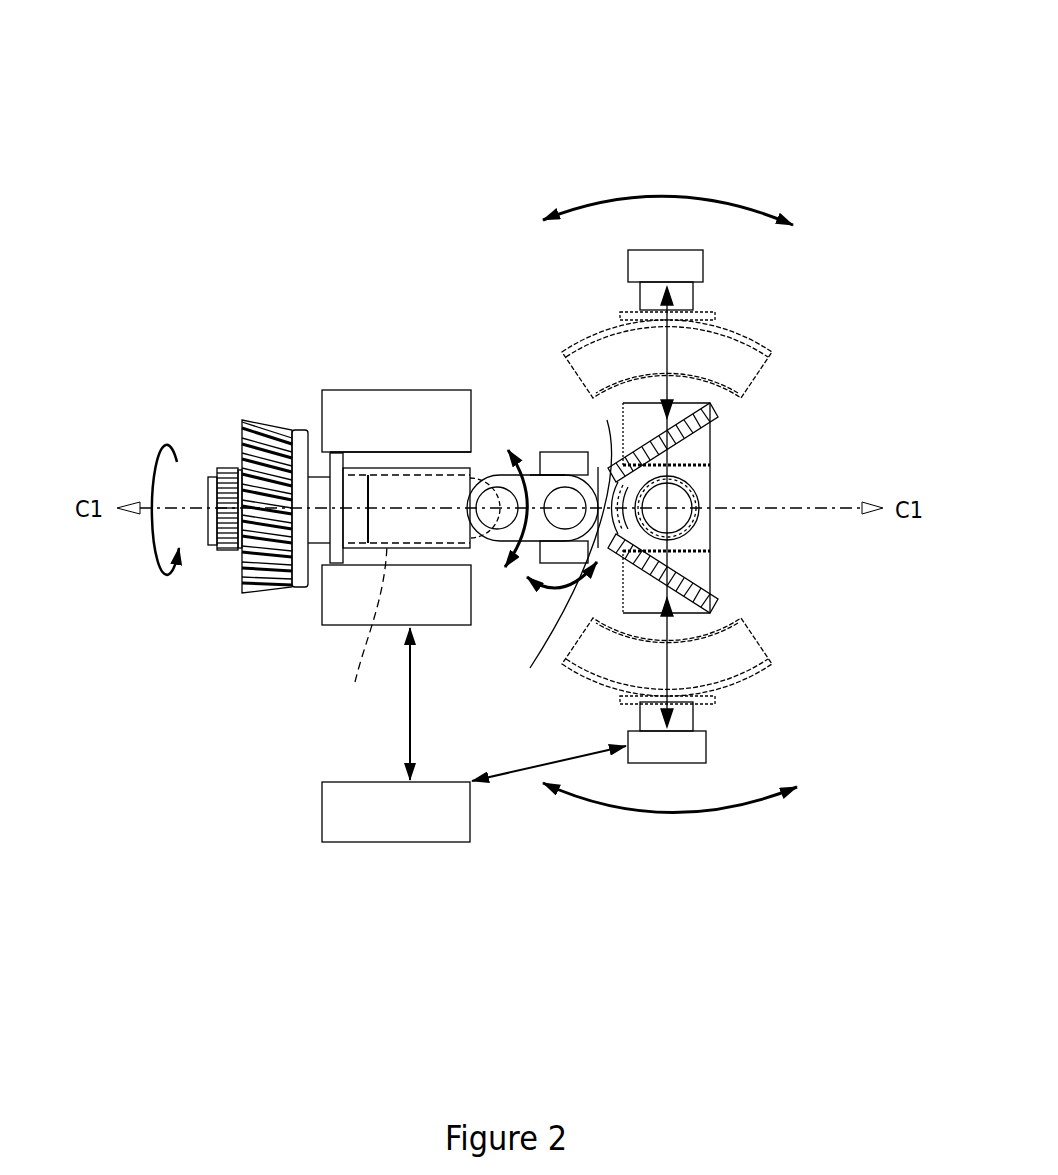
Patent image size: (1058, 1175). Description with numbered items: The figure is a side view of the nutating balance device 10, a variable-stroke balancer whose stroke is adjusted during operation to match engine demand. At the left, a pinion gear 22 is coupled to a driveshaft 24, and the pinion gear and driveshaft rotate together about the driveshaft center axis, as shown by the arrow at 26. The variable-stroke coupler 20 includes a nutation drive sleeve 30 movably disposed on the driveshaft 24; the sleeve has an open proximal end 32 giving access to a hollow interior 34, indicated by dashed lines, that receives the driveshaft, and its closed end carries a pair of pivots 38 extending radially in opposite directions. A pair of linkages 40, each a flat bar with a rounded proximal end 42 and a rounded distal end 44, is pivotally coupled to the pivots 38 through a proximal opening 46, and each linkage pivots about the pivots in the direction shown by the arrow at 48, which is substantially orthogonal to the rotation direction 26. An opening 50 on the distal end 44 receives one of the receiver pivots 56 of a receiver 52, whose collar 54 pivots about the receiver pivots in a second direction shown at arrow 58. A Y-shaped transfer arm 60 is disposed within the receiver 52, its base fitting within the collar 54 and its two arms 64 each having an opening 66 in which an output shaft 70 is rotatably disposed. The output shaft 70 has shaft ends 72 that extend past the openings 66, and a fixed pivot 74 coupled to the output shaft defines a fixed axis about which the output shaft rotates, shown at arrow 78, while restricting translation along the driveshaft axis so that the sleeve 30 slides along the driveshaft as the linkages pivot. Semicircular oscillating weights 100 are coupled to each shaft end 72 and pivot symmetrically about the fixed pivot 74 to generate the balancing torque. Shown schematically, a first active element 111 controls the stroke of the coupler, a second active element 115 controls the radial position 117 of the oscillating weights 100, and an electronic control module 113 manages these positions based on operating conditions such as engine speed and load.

The nutating balance device 10 is at (270, 88).
The variable-stroke coupler 20 is at (434, 275).
The pinion gear 22 is at (268, 435).
The driveshaft 24 is at (320, 476).
The direction of rotation 26 is at (197, 510).
The nutation drive sleeve 30 is at (397, 477).
The open proximal end 32 is at (335, 566).
The hollow interior 34 is at (358, 626).
The pivots 38 is at (492, 535).
The linkages 40 is at (468, 390).
The rounded proximal end 42 is at (460, 452).
The rounded distal end 44 is at (611, 470).
The proximal opening 46 is at (491, 515).
The direction of linkage pivoting 48 is at (500, 482).
The opening 50 is at (547, 477).
The receiver 52 is at (557, 477).
The collar 54 is at (565, 477).
The receiver pivots 56 is at (572, 480).
The direction of receiver pivoting 58 is at (560, 585).
The transfer arm 60 is at (555, 554).
The arms 64 is at (705, 432).
The opening 66 is at (712, 450).
The output shaft 70 is at (700, 457).
The shaft ends 72 is at (697, 318).
The fixed pivot 74 is at (700, 508).
The direction of output shaft rotation 78 is at (670, 196).
The oscillating weights 100 is at (727, 353).
The first active element 111 is at (338, 620).
The electronic control module 113 is at (350, 838).
The second active element 115 is at (665, 268).
The radial position 117 is at (668, 353).